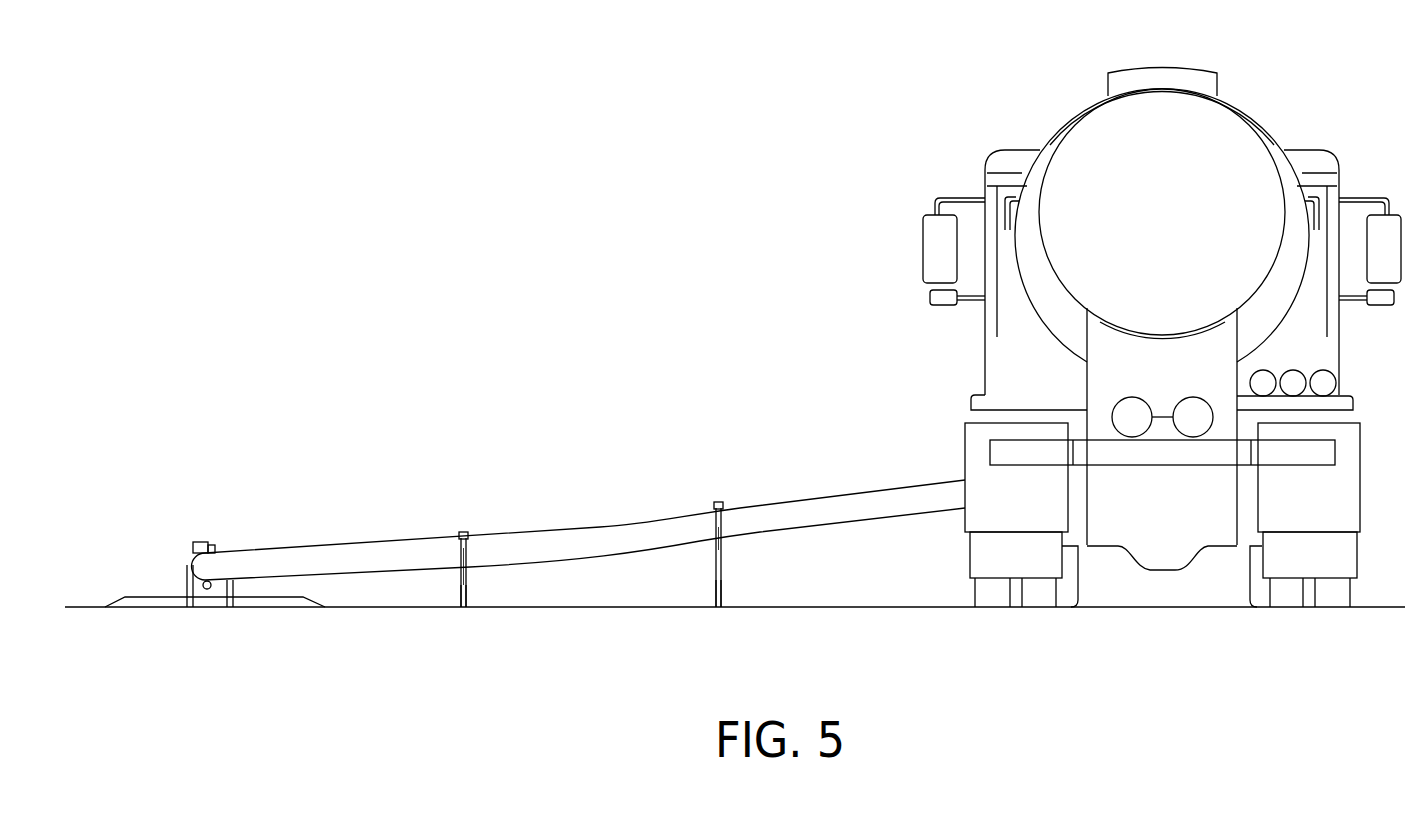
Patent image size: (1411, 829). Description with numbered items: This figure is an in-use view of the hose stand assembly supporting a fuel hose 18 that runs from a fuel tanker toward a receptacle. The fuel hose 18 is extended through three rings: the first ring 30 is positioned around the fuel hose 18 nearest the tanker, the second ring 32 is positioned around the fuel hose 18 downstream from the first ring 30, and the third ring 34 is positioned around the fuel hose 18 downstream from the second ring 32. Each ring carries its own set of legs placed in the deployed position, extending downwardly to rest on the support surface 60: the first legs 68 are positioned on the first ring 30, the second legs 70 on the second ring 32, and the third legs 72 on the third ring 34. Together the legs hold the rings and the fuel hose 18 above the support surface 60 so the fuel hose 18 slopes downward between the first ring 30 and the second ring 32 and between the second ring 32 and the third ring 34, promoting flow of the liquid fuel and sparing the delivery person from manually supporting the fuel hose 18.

The fuel hose 18 is at (612, 530).
The first ring 30 is at (722, 521).
The second ring 32 is at (467, 553).
The third ring 34 is at (192, 559).
The support surface 60 is at (863, 607).
The first legs 68 is at (716, 585).
The second legs 70 is at (461, 595).
The third legs 72 is at (186, 587).